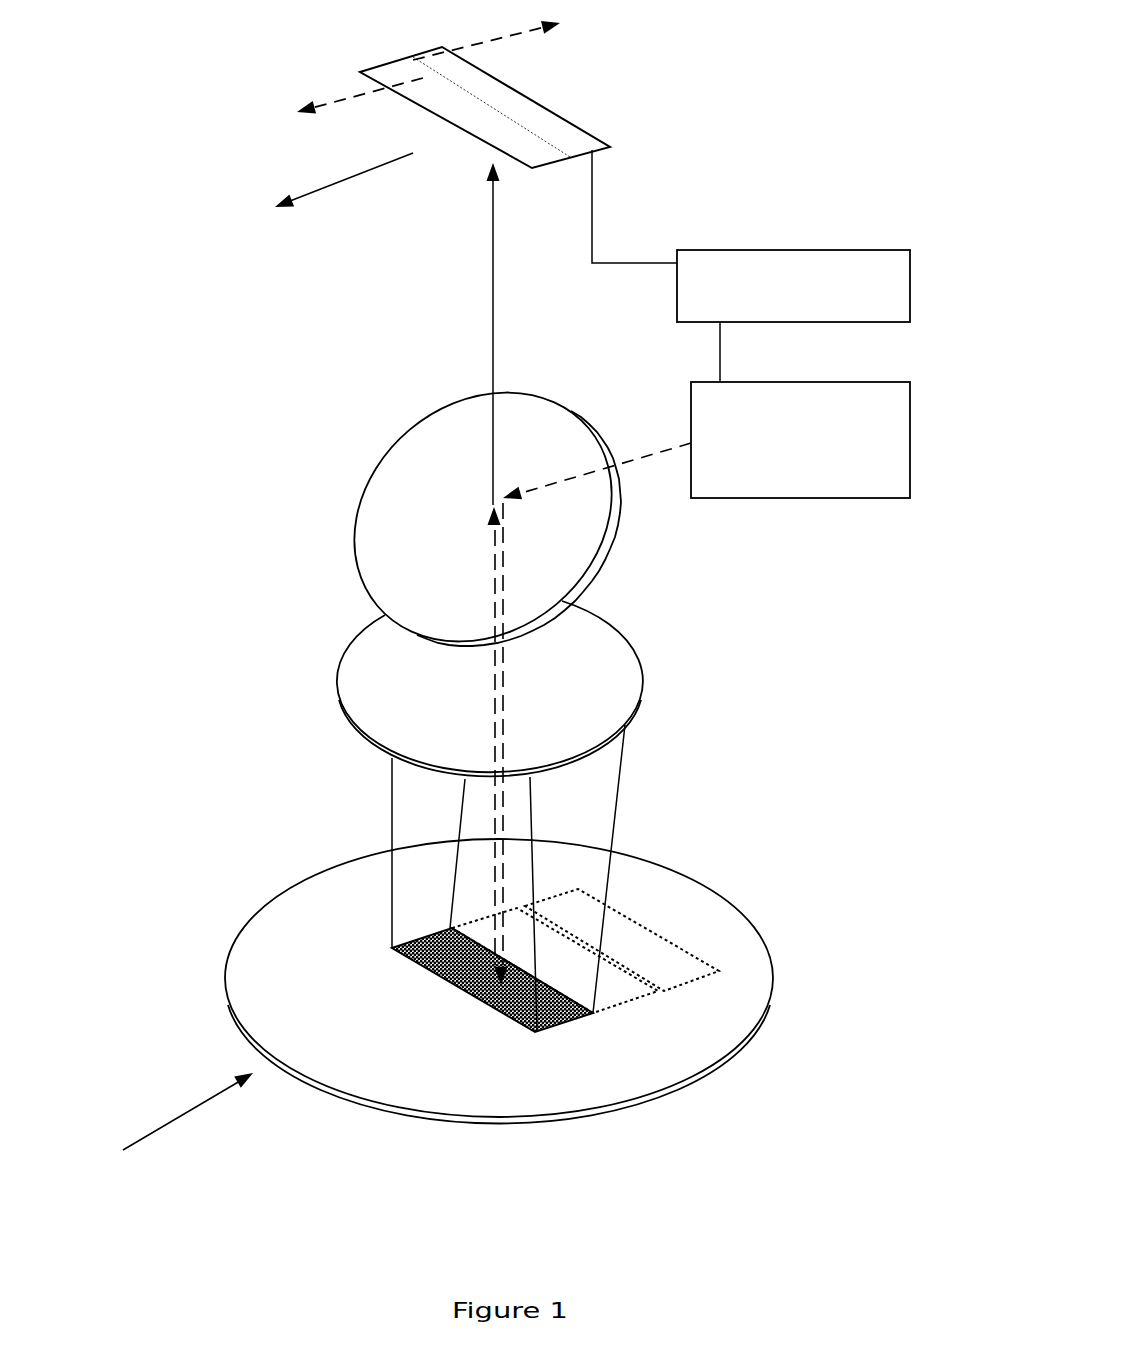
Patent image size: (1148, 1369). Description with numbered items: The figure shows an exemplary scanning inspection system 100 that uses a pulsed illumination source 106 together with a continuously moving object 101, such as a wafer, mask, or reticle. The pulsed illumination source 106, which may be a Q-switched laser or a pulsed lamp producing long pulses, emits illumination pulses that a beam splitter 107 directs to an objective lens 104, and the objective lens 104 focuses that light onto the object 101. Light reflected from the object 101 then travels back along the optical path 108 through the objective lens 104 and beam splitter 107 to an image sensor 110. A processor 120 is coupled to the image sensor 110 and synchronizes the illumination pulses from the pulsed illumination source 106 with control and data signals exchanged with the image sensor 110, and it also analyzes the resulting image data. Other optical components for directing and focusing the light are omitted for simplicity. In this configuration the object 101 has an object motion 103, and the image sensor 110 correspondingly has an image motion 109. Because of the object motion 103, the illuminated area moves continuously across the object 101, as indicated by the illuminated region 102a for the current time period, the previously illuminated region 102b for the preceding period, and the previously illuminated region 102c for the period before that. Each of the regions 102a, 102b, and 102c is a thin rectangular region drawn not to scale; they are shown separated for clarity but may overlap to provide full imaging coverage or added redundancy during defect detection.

The system 100 is at (895, 38).
The object 101 is at (713, 890).
The illuminated region 102a is at (493, 1008).
The previously illuminated region 102b is at (627, 1002).
The previously illuminated region 102c is at (697, 980).
The object motion 103 is at (184, 1092).
The objective lens 104 is at (385, 675).
The pulsed illumination source 106 is at (706, 440).
The beam splitter 107 is at (413, 515).
The optical axis / light path 108 is at (522, 334).
The image motion 109 is at (344, 218).
The image sensor 110 is at (585, 128).
The processor 120 is at (751, 266).